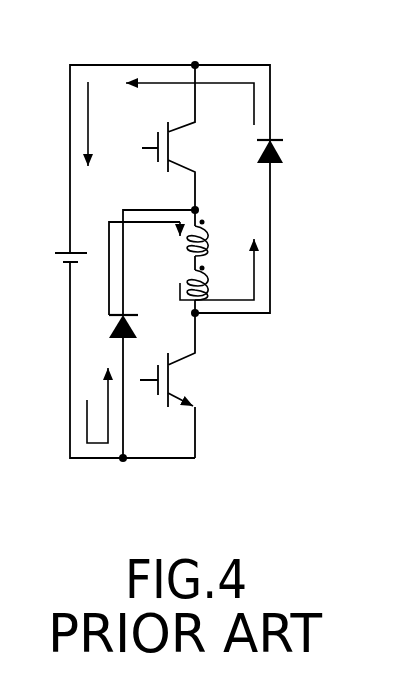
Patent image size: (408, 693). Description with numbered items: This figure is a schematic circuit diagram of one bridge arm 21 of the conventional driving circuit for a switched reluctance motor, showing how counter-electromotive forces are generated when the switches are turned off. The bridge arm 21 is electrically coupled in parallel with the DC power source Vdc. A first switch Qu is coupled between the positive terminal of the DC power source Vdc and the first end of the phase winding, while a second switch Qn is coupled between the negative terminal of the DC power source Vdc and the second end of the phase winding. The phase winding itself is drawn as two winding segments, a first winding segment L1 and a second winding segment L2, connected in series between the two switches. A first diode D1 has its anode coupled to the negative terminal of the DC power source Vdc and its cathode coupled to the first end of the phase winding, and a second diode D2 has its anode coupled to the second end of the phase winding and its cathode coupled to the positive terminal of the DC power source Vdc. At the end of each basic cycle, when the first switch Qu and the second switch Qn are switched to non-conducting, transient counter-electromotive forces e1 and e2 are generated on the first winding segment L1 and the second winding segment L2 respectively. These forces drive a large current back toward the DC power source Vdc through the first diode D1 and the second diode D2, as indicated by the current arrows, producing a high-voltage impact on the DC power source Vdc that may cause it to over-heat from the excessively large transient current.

The bridge arm 21 is at (286, 48).
The DC power source Vdc is at (52, 252).
The first switch Qu is at (183, 137).
The second switch Qn is at (182, 385).
The first diode D1 is at (140, 326).
The second diode D2 is at (288, 152).
The first winding segment L1 is at (175, 240).
The second winding segment L2 is at (175, 290).
The counter-electromotive force e1 is at (226, 239).
The counter-electromotive force e2 is at (217, 279).